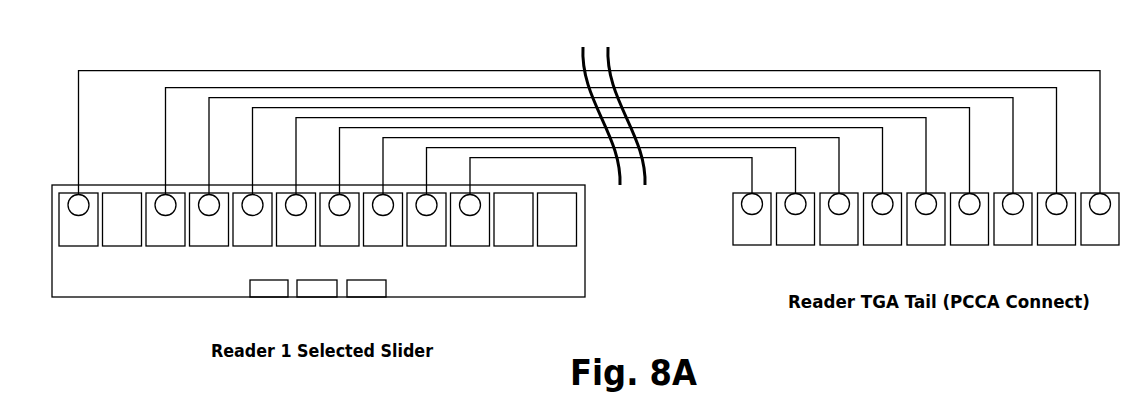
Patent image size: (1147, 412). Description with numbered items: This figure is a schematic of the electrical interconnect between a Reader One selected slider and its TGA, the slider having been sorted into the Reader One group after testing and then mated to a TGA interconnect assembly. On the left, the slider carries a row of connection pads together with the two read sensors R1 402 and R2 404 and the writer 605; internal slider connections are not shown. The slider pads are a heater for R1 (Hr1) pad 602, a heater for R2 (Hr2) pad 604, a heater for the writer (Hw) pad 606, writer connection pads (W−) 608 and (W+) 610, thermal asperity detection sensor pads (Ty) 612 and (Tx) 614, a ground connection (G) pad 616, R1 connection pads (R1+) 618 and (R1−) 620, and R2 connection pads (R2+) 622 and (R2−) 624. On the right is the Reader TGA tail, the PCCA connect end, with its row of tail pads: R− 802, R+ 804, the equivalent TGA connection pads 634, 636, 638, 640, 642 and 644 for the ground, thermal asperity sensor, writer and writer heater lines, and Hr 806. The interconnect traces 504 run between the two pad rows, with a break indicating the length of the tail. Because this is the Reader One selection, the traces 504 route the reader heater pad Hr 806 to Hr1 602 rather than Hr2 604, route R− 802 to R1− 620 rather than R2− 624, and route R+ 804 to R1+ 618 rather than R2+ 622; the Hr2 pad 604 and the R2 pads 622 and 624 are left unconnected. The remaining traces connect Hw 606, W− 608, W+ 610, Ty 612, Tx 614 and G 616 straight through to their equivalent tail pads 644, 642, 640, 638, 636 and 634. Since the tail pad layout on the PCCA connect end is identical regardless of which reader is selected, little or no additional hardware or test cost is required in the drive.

The interconnect traces 504 is at (467, 98).
The R1 402 is at (285, 297).
The writer 605 is at (334, 297).
The R2 404 is at (383, 297).
The heater for R1 (Hr1) pad 602 is at (80, 246).
The heater for R2 (Hr2) pad 604 is at (124, 246).
The heater for the writer (Hw) pad 606 is at (167, 246).
The writer connection pad (W−) 608 is at (211, 246).
The writer connection pad (W+) 610 is at (253, 246).
The thermal asperity detection sensor pad (Ty) 612 is at (297, 246).
The thermal asperity detection sensor pad (Tx) 614 is at (341, 246).
The ground connection (G) pad 616 is at (384, 246).
The R1 connection pad (R1+) 618 is at (431, 246).
The R1 connection pad (R1−) 620 is at (474, 246).
The R2 connection pad (R2+) 622 is at (512, 246).
The R2 connection pad (R2−) 624 is at (557, 246).
The R− pad 802 is at (755, 245).
The R+ pad 804 is at (799, 245).
The TGA connection pad 634 is at (842, 245).
The TGA connection pad 636 is at (886, 245).
The TGA connection pad 638 is at (929, 245).
The TGA connection pad 640 is at (973, 245).
The TGA connection pad 642 is at (1016, 245).
The TGA connection pad 644 is at (1060, 245).
The Hr pad 806 is at (1103, 245).